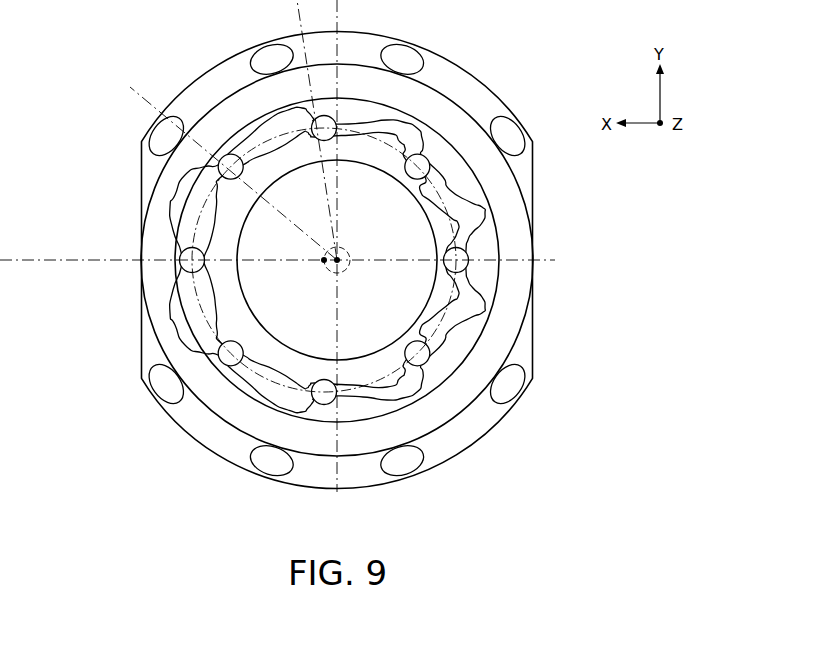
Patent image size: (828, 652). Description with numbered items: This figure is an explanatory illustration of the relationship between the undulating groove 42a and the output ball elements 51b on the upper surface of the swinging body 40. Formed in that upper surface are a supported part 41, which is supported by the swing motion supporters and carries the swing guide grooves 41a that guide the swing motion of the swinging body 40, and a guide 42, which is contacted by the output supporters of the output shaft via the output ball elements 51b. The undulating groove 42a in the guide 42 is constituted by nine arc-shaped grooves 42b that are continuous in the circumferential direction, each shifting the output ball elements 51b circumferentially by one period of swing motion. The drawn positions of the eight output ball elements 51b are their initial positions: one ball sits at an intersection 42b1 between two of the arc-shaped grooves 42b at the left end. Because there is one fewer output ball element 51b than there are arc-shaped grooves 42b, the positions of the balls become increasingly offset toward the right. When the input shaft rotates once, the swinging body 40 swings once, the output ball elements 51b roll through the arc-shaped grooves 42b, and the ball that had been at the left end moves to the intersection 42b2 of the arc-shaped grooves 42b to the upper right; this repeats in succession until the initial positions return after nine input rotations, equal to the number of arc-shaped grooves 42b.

The swinging body 40 is at (472, 65).
The supported part 41 is at (470, 426).
The swing guide grooves 41a is at (512, 392).
The guide 42 is at (337, 259).
The undulating groove 42a is at (207, 228).
The arc-shaped grooves 42b is at (252, 112).
The intersection 42b1 is at (178, 273).
The intersection 42b2 is at (217, 167).
The output ball elements 51b is at (183, 247).